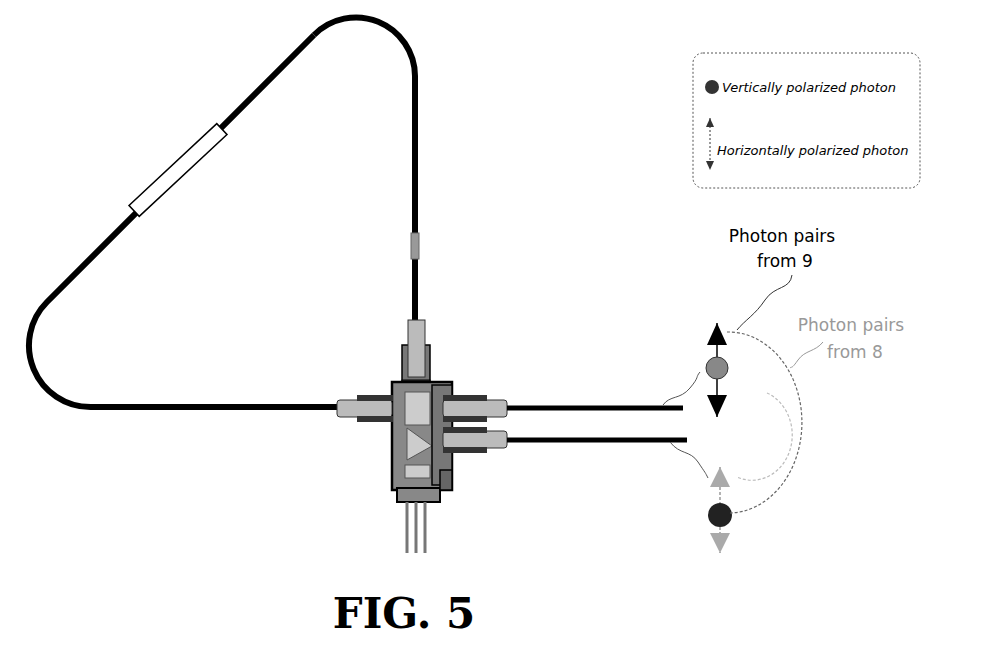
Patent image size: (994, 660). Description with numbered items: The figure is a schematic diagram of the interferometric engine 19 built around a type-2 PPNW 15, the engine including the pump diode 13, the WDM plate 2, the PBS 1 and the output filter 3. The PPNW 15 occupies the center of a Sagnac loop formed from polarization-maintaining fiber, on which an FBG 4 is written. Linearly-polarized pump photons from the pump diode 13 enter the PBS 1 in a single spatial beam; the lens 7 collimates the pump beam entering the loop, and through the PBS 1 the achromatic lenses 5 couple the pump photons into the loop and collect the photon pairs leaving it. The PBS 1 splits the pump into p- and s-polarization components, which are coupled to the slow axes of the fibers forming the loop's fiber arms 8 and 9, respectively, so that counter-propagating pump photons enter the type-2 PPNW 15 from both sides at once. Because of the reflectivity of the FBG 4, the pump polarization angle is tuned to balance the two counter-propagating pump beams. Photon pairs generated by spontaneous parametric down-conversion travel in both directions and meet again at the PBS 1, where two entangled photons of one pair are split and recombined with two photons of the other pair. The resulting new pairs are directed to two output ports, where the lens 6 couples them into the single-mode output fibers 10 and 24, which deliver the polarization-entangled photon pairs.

The PBS 1 is at (393, 425).
The WDM plate 2 is at (393, 442).
The output filter 3 is at (443, 373).
The FBG 4 is at (410, 240).
The achromatic lenses 5 is at (400, 372).
The lens 6 is at (487, 402).
The lens 7 is at (397, 473).
The fiber arm 8 is at (418, 90).
The fiber arm 9 is at (80, 410).
The output fiber 10 is at (545, 442).
The pump diode 13 is at (407, 507).
The type-2 PPNW 15 is at (192, 168).
The interferometric engine 19 is at (455, 492).
The output fiber 24 is at (545, 407).